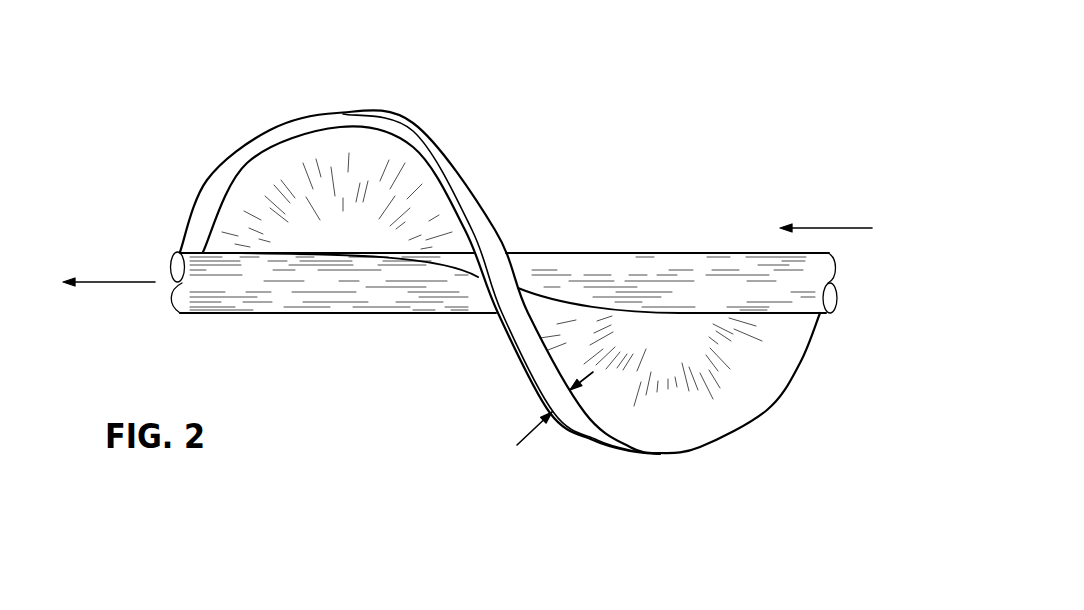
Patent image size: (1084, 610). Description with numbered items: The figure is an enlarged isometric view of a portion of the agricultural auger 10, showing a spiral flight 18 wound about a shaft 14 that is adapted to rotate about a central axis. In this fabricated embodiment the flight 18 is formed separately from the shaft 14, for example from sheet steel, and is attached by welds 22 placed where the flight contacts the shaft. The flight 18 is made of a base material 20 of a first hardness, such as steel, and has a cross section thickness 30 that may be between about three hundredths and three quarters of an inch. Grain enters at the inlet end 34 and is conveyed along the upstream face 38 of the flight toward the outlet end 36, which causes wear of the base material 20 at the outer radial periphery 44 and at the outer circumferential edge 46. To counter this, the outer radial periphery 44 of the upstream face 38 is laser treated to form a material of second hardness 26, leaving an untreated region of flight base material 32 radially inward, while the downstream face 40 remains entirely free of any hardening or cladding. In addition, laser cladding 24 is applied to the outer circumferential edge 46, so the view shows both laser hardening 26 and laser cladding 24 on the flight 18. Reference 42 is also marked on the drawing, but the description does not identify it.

The agricultural auger 10 is at (795, 89).
The shaft 14 is at (835, 267).
The flight 18 is at (825, 356).
The base material 20 is at (260, 174).
The welds 22 is at (452, 266).
The laser cladding 24 is at (432, 163).
The material of second hardness 26 is at (297, 128).
The cross section thickness 30 is at (517, 445).
The untreated region of flight base material 32 is at (240, 217).
The inlet end 34 is at (833, 227).
The outlet end 36 is at (108, 283).
The upstream face 38 is at (352, 205).
The downstream face 40 is at (678, 436).
The flight strip edge 42 is at (727, 420).
The outer radial periphery 44 is at (270, 140).
The outer circumferential edge 46 is at (500, 279).